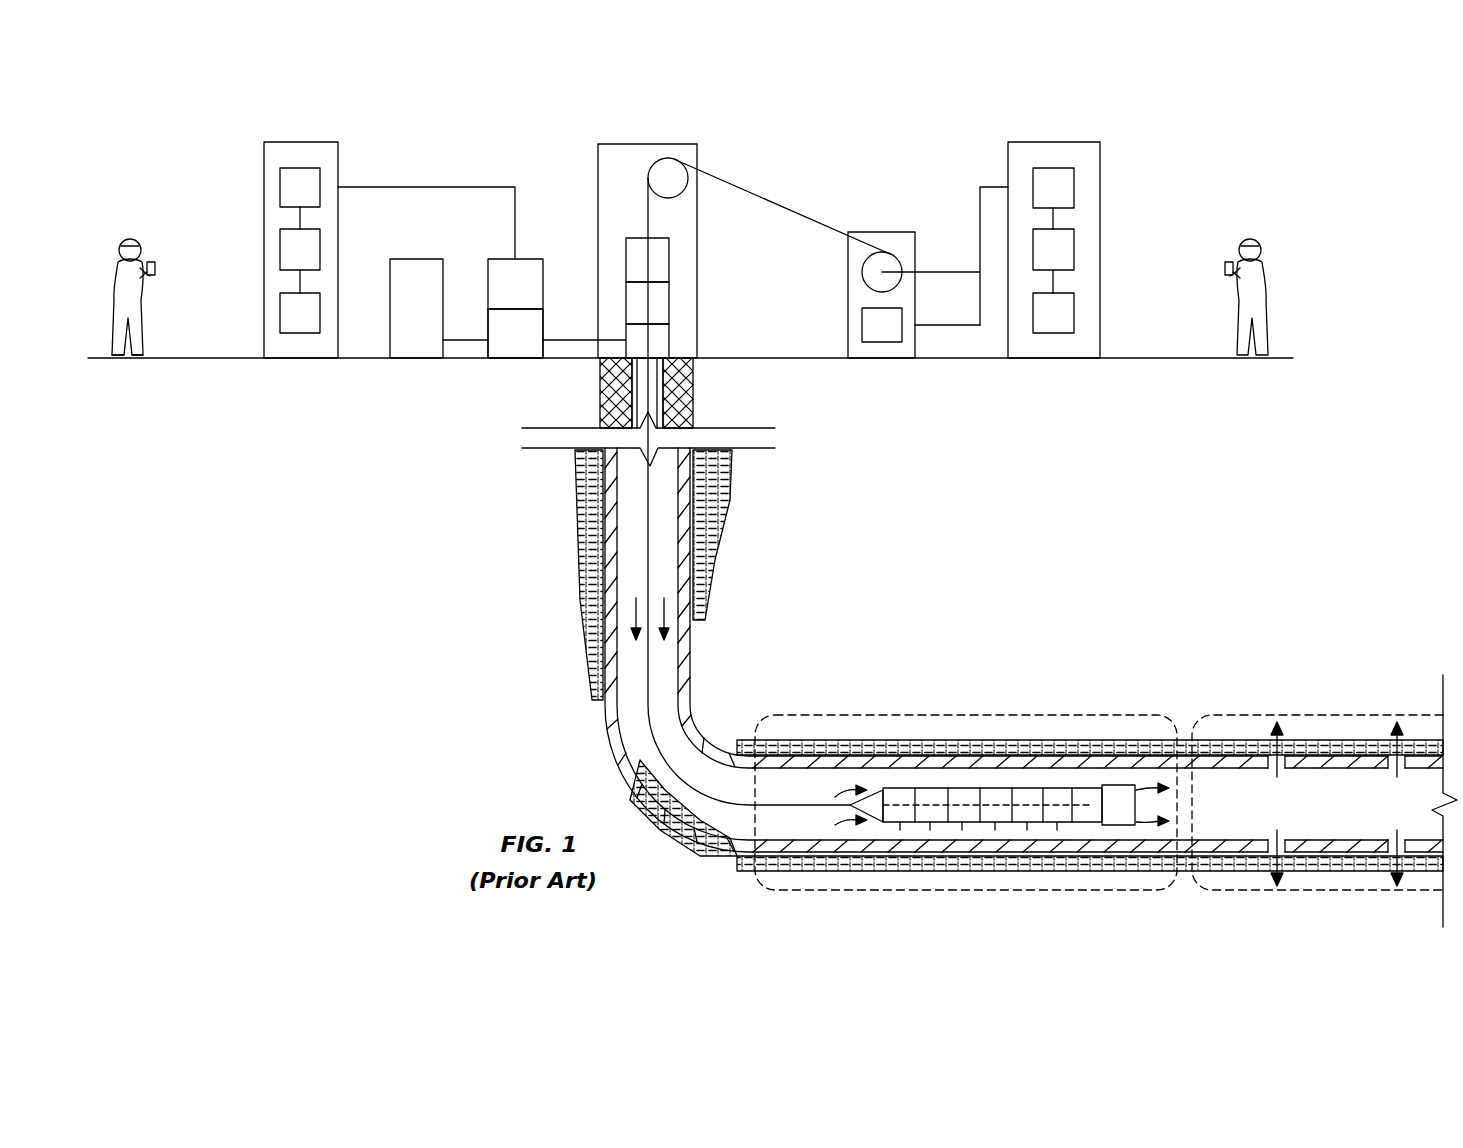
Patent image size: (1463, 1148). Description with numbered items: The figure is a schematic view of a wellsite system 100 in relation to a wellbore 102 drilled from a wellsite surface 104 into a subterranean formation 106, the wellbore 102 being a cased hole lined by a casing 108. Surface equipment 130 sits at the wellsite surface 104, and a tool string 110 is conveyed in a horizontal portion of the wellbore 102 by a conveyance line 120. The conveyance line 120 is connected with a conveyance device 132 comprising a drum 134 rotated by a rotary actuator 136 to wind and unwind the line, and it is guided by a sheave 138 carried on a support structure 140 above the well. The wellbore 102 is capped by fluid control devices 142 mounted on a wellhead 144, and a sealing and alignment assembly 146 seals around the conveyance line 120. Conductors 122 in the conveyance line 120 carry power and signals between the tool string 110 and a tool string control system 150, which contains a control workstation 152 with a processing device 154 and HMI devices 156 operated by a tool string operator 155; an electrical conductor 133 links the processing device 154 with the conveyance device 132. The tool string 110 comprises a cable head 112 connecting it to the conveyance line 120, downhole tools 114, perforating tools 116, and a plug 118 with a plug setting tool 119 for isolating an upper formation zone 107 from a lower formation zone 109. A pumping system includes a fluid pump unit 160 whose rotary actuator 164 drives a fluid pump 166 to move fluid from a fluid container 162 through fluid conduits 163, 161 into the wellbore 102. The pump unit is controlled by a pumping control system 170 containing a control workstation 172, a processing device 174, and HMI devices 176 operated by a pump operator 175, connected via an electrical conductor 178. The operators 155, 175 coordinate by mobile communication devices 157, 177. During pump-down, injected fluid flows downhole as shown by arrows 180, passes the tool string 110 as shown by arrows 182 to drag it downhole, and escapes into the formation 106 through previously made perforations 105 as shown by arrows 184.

The wellsite system 100 is at (165, 107).
The wellbore 102 is at (690, 393).
The wellsite surface 104 is at (1188, 358).
The perforations 105 is at (1255, 745).
The subterranean formation 106 is at (587, 490).
The upper formation zone 107 is at (1045, 715).
The casing 108 is at (605, 633).
The lower formation zone 109 is at (1330, 715).
The tool string 110 is at (928, 775).
The cable head 112 is at (875, 788).
The downhole tools 114 is at (962, 830).
The perforating tools 116 is at (1027, 830).
The plug 118 is at (1118, 826).
The plug setting tool 119 is at (1057, 830).
The conveyance line 120 is at (645, 217).
The conductors 122 is at (933, 272).
The surface equipment 130 is at (1218, 162).
The conveyance device 132 is at (880, 230).
The electrical conductor 133 is at (933, 322).
The drum 134 is at (862, 273).
The rotary actuator 136 is at (862, 315).
The sheave 138 is at (647, 175).
The support structure 140 is at (697, 153).
The fluid control devices 142 is at (670, 302).
The wellhead 144 is at (670, 342).
The sealing and alignment assembly 146 is at (670, 260).
The tool string control system 150 is at (1100, 153).
The control workstation 152 is at (1074, 257).
The processing device 154 is at (1074, 196).
The tool string operator 155 is at (1248, 240).
The HMI devices 156 is at (1074, 322).
The mobile communication device 157 is at (1227, 268).
The fluid pump unit 160 is at (488, 258).
The fluid conduit 161 is at (582, 338).
The fluid container 162 is at (402, 258).
The fluid conduit 163 is at (477, 338).
The rotary actuator 164 is at (532, 280).
The fluid pump 166 is at (517, 348).
The pumping control system 170 is at (264, 160).
The control workstation 172 is at (280, 246).
The processing device 174 is at (280, 190).
The pump operator 175 is at (130, 237).
The HMI devices 176 is at (280, 308).
The mobile communication device 177 is at (153, 262).
The electrical conductor 178 is at (430, 186).
The downhole fluid flow 180 is at (668, 613).
The fluid flow past tool string 182 is at (840, 828).
The fluid flow into formation 184 is at (1392, 750).